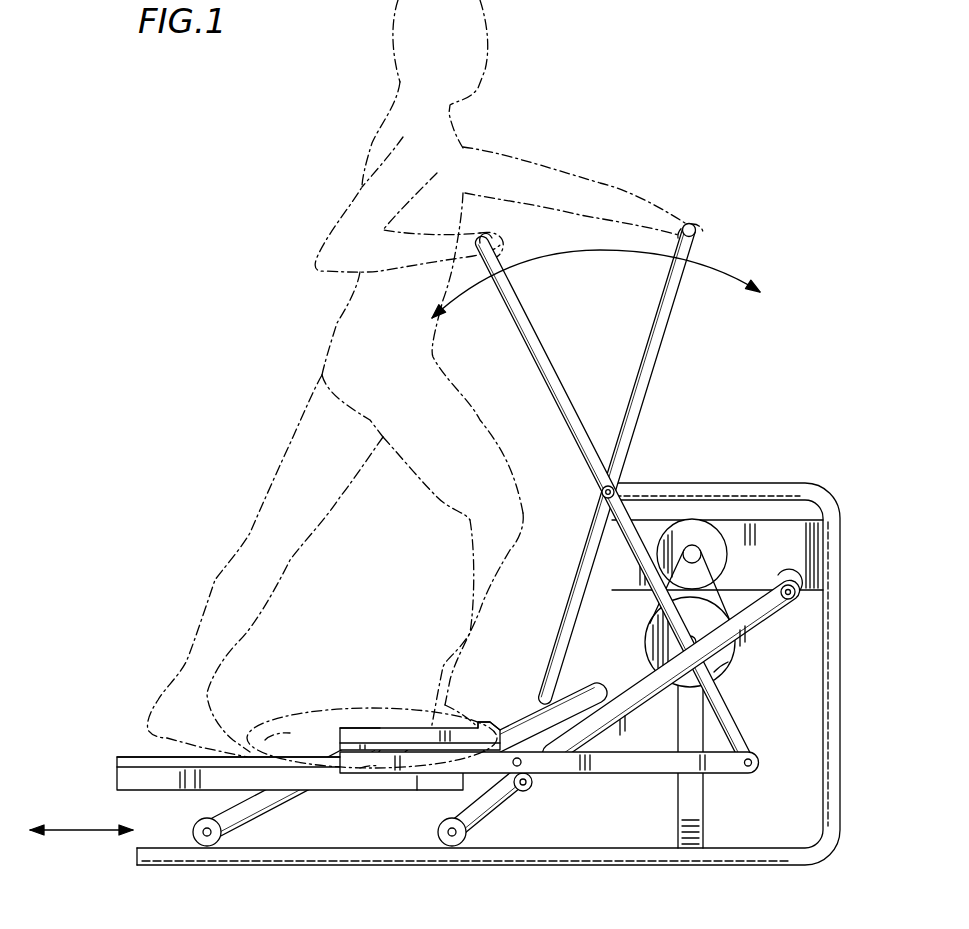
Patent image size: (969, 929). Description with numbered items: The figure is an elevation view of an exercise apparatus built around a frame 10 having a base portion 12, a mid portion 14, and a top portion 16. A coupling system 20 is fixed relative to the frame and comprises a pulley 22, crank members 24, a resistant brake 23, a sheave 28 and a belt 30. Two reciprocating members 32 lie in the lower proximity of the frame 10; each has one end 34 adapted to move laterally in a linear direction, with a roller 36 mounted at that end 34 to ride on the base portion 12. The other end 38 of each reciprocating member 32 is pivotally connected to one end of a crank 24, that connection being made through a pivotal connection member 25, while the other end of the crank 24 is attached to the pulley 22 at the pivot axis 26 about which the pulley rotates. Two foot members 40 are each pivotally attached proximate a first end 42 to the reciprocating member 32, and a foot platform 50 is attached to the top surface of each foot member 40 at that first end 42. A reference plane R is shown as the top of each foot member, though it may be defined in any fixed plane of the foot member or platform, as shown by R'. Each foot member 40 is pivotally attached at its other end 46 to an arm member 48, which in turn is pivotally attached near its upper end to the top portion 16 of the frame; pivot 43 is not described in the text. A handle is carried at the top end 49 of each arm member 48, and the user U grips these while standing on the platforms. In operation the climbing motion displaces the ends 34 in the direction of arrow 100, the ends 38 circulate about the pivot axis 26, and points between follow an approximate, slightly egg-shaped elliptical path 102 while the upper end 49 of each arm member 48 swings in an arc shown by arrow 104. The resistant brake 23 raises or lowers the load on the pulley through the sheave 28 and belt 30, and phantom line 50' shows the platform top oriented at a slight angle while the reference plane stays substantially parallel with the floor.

The frame 10 is at (842, 670).
The base portion 12 is at (716, 867).
The mid portion 14 is at (839, 560).
The top portion 16 is at (766, 483).
The coupling system 20 is at (736, 652).
The pulley 22 is at (660, 636).
The resistant brake 23 is at (689, 522).
The crank member 24 is at (760, 613).
The pivotal connection member 25 is at (796, 594).
The pivot axis 26 is at (716, 673).
The sheave 28 is at (683, 551).
The belt 30 is at (655, 604).
The reciprocating member 32 is at (262, 803).
The end of reciprocating member 34 is at (220, 843).
The roller 36 is at (200, 833).
The other end of reciprocating member 38 is at (786, 580).
The foot member 40 is at (416, 775).
The first end of foot member 42 is at (157, 788).
The pole pivot 43 is at (602, 489).
The other end of foot member 46 is at (760, 763).
The arm member 48 is at (647, 350).
The top end of arm member 49 is at (687, 220).
The foot platform 50 is at (297, 712).
The phantom line of foot platform 50' is at (355, 666).
The arrow 100 is at (88, 830).
The elliptical path 102 is at (315, 708).
The arrow 104 is at (730, 278).
The user U is at (380, 141).
The reference plane R is at (268, 708).
The alternative reference plane R' is at (356, 801).